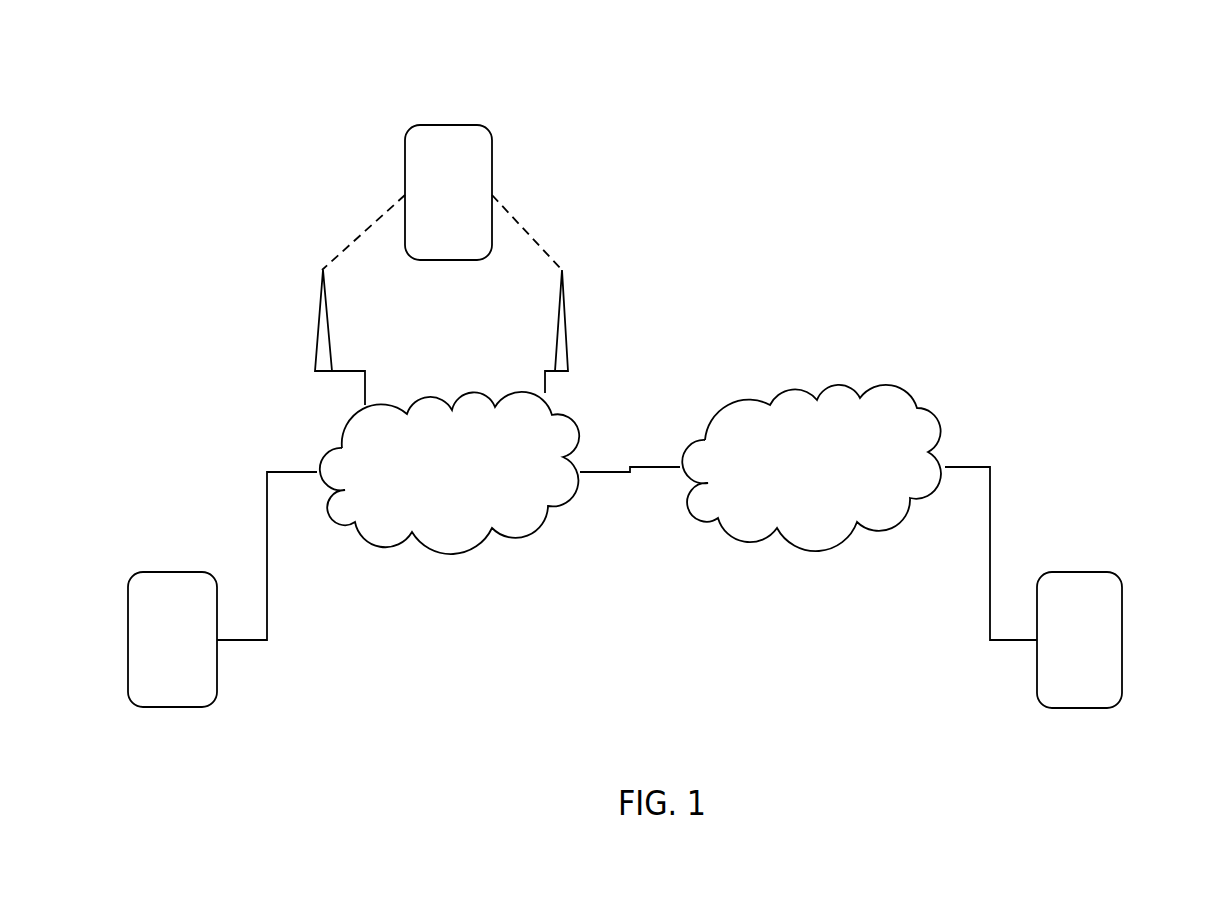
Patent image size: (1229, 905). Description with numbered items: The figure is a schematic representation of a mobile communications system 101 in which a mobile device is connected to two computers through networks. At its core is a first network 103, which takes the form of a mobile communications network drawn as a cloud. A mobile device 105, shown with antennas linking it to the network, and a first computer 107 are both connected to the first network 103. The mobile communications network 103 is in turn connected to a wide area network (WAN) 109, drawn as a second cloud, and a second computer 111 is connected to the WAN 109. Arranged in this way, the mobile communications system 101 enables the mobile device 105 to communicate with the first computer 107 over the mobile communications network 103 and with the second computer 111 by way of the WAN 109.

The mobile communications system 101 is at (806, 238).
The first network 103 is at (447, 555).
The mobile device 105 is at (448, 125).
The first computer 107 is at (172, 707).
The wide area network (WAN) 109 is at (815, 397).
The second computer 111 is at (1078, 572).